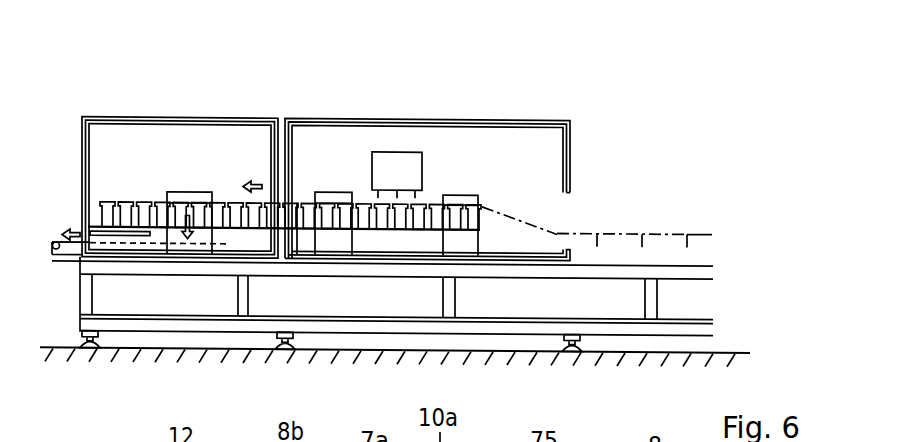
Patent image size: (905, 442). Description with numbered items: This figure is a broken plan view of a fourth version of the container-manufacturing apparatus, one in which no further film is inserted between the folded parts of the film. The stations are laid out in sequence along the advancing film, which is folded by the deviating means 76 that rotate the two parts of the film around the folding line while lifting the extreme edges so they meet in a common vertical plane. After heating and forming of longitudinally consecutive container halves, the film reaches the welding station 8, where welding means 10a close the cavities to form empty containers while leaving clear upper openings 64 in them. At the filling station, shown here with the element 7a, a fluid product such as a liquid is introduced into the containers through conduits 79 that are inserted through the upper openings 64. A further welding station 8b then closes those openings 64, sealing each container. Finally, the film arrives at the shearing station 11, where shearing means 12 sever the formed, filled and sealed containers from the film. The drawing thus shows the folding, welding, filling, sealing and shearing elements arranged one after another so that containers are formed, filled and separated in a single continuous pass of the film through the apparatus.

The shearing station 11 is at (180, 146).
The shearing means 12 is at (196, 190).
The further welding station 8b is at (325, 188).
The conduits 79 is at (380, 195).
The control unit 7a is at (392, 148).
The upper openings 64 is at (442, 197).
The welding station 8 is at (452, 175).
The welding means 10a is at (467, 193).
The deviating means 76 is at (482, 204).